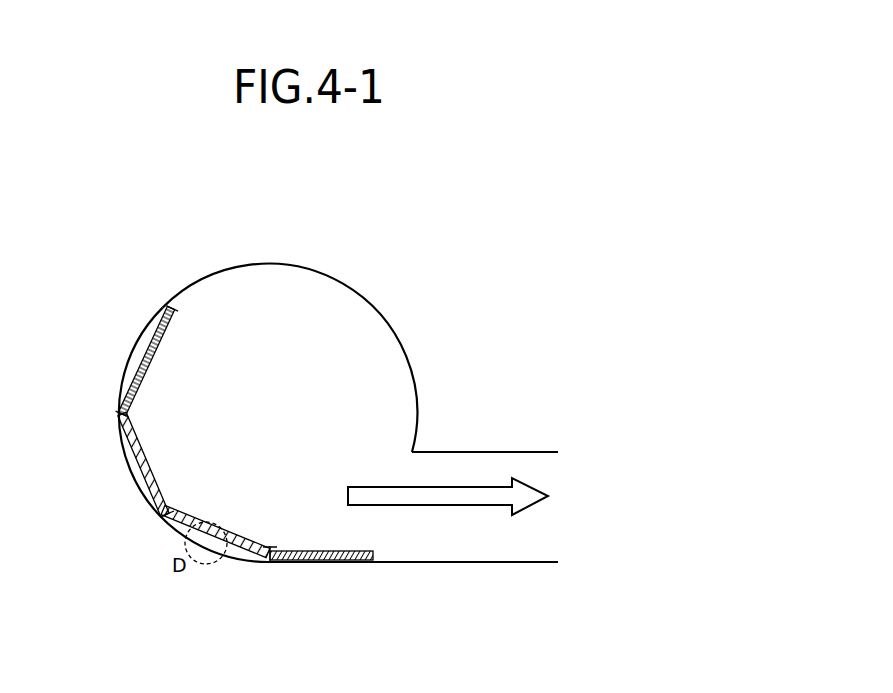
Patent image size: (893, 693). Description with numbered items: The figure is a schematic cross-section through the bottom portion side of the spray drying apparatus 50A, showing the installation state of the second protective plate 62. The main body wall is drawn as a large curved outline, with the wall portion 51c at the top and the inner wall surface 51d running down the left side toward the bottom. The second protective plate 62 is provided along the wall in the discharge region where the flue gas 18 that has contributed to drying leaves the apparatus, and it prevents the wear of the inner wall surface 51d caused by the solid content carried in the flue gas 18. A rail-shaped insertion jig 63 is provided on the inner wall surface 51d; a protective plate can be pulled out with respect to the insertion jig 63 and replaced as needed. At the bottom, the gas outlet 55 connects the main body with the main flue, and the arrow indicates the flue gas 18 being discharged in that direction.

The spray drying apparatus 50A is at (308, 389).
The curved surface portion 51c is at (275, 264).
The inner wall surface 51d is at (132, 353).
The insertion jig 63 is at (179, 313).
The second protective plate 62 is at (158, 463).
The flue gas 18 is at (472, 487).
The gas outlet 55 is at (523, 564).